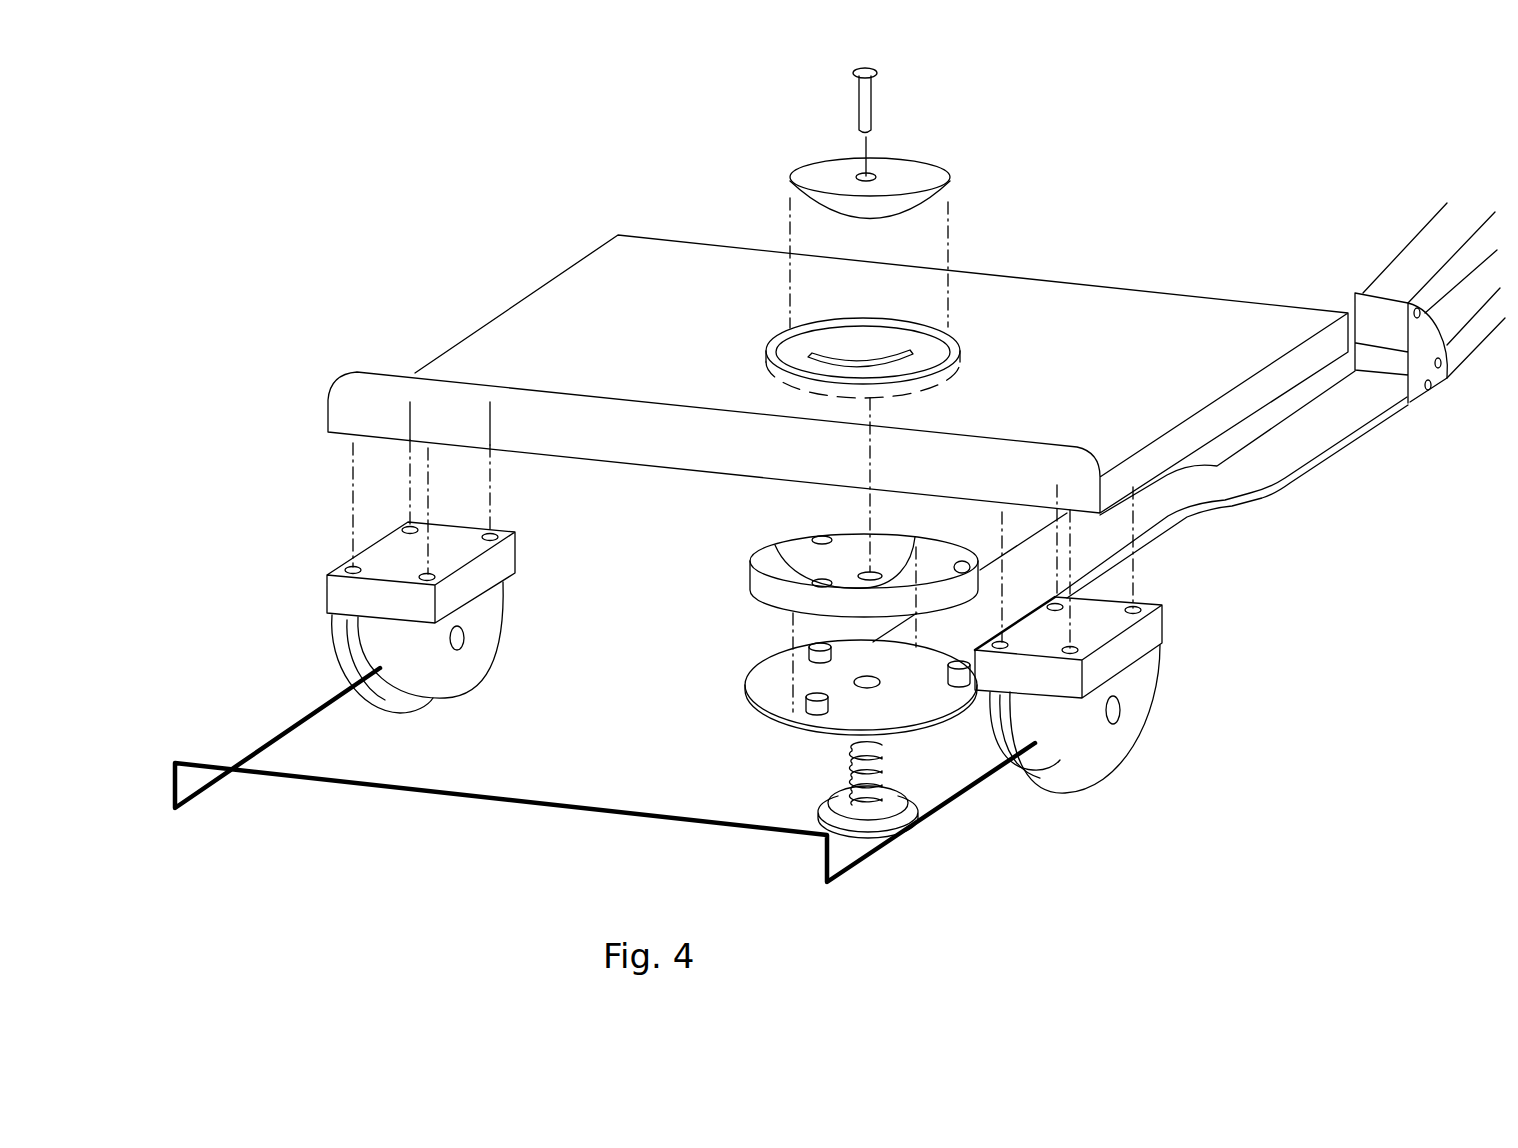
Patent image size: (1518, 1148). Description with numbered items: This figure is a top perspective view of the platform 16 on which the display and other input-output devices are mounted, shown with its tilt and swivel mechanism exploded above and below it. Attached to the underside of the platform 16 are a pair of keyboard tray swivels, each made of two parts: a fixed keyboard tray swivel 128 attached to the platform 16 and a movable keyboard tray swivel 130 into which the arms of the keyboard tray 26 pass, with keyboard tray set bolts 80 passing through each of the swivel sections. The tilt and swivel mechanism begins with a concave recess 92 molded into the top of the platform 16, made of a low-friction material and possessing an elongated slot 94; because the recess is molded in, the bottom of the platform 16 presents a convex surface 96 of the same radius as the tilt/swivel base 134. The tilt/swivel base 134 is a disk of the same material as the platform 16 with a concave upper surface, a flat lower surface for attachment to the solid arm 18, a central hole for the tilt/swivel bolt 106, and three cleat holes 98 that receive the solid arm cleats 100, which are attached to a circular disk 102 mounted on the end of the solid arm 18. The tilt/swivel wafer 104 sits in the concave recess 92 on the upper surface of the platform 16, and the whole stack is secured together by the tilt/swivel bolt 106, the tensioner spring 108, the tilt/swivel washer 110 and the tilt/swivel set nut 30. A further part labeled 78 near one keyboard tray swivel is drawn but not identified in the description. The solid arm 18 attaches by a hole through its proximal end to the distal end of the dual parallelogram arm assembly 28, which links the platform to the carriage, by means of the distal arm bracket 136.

The platform 16 is at (560, 272).
The solid arm 18 is at (1183, 495).
The keyboard tray 26 is at (288, 726).
The dual parallelogram arm assembly 28 is at (1408, 250).
The tilt/swivel set nut 30 is at (818, 818).
The left wheel assembly 78 is at (460, 650).
The keyboard tray set bolts 80 is at (1120, 710).
The concave recess 92 is at (783, 330).
The elongated slot 94 is at (883, 363).
The convex surface 96 is at (920, 388).
The cleat holes 98 is at (815, 538).
The solid arm cleats 100 is at (873, 642).
The circular disk 102 is at (747, 682).
The tilt/swivel wafer 104 is at (922, 162).
The tilt/swivel bolt 106 is at (850, 93).
The tensioner spring 108 is at (857, 743).
The tilt/swivel washer 110 is at (837, 788).
The fixed keyboard tray swivel 128 is at (1153, 725).
The movable keyboard tray swivel 130 is at (1060, 767).
The tilt/swivel base 134 is at (747, 553).
The distal arm bracket 136 is at (1417, 402).